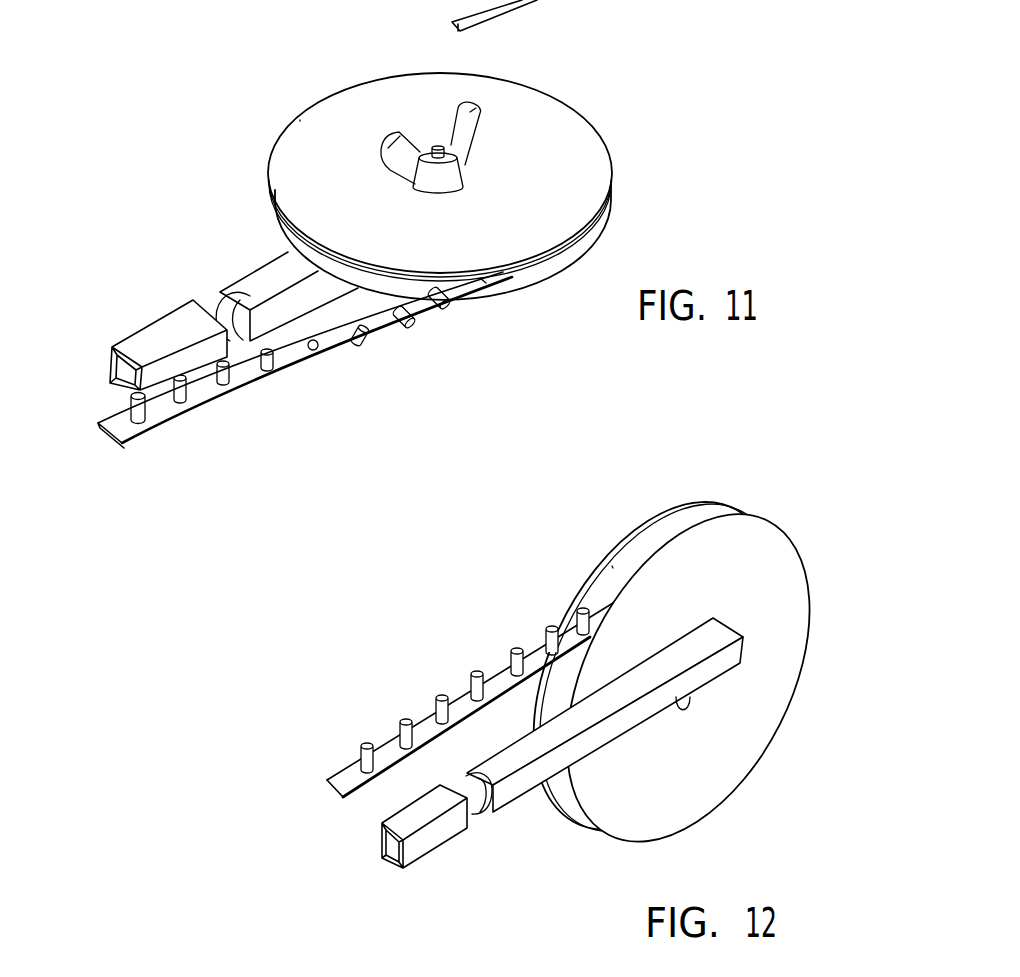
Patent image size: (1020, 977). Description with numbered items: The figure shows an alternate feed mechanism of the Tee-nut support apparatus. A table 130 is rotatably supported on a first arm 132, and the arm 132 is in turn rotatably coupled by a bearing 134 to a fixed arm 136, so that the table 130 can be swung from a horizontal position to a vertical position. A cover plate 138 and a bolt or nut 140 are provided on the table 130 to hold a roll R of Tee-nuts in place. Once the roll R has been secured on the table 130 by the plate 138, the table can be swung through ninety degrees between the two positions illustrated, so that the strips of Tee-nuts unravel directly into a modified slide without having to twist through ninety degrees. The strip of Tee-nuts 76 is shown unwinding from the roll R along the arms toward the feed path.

In FIG. 11, the pin strip 76 is at (205, 384).
In FIG. 12, the pin strip 76 is at (385, 752).
In FIG. 11, the table 130 is at (268, 202).
In FIG. 12, the table 130 is at (723, 588).
In FIG. 11, the first arm 132 is at (253, 283).
In FIG. 12, the first arm 132 is at (502, 707).
In FIG. 11, the bearing 134 is at (211, 306).
In FIG. 12, the bearing 134 is at (490, 812).
In FIG. 11, the fixed arm 136 is at (153, 338).
In FIG. 12, the fixed arm 136 is at (421, 812).
In FIG. 11, the cover plate 138 is at (332, 120).
In FIG. 12, the cover plate 138 is at (612, 567).
In FIG. 11, the bolt or nut 140 is at (480, 110).
In FIG. 11, the roll of Tee-nuts R is at (483, 280).